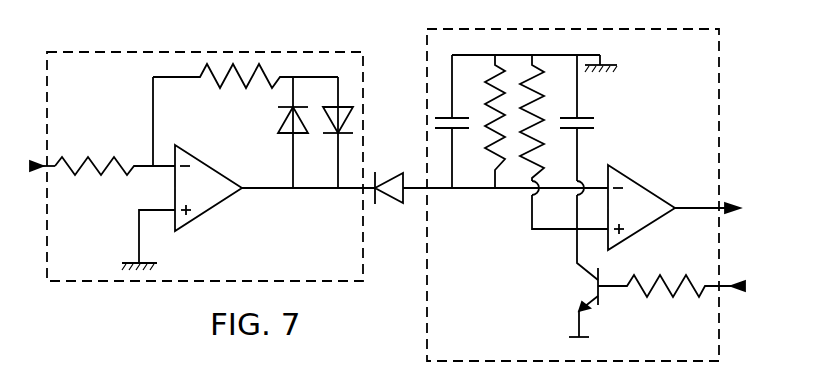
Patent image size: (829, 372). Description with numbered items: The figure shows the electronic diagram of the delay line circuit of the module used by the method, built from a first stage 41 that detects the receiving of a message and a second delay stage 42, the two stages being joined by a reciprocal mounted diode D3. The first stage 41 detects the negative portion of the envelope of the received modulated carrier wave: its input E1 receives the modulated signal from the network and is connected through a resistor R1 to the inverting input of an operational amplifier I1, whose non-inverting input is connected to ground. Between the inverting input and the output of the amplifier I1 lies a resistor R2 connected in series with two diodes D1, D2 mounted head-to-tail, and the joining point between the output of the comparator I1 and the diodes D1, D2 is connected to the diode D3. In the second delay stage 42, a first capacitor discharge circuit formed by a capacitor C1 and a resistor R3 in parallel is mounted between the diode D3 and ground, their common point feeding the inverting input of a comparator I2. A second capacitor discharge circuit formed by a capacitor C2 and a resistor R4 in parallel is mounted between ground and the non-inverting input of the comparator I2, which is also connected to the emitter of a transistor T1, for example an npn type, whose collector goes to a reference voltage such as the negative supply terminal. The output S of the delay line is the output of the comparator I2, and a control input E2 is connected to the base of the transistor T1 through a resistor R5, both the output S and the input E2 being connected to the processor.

The first stage 41 is at (260, 50).
The second delay stage 42 is at (427, 47).
The input E1 is at (39, 160).
The control input E2 is at (736, 283).
The output S is at (724, 206).
The resistor R1 is at (105, 178).
The resistor R2 is at (213, 87).
The resistor R3 is at (494, 100).
The resistor R4 is at (543, 106).
The resistor R5 is at (664, 280).
The capacitor C1 is at (440, 115).
The capacitor C2 is at (594, 131).
The diode D1 is at (280, 126).
The diode D2 is at (353, 114).
The reciprocal mounted diode D3 is at (378, 177).
The operational amplifier I1 is at (212, 212).
The comparator I2 is at (634, 181).
The transistor T1 is at (604, 300).